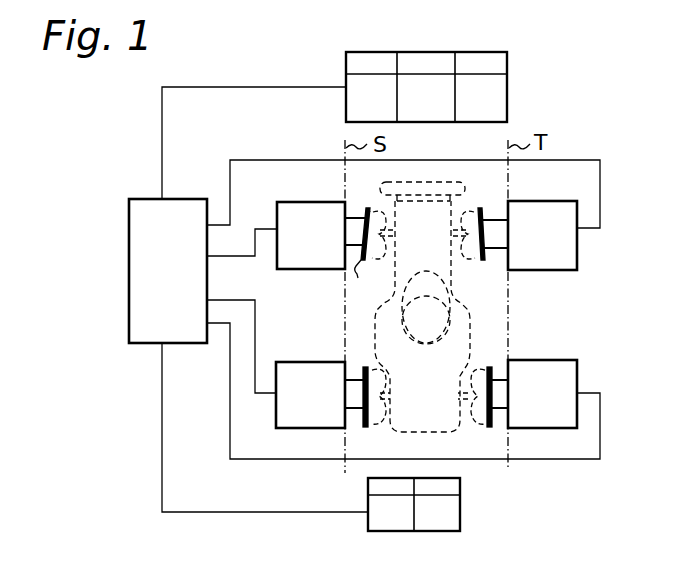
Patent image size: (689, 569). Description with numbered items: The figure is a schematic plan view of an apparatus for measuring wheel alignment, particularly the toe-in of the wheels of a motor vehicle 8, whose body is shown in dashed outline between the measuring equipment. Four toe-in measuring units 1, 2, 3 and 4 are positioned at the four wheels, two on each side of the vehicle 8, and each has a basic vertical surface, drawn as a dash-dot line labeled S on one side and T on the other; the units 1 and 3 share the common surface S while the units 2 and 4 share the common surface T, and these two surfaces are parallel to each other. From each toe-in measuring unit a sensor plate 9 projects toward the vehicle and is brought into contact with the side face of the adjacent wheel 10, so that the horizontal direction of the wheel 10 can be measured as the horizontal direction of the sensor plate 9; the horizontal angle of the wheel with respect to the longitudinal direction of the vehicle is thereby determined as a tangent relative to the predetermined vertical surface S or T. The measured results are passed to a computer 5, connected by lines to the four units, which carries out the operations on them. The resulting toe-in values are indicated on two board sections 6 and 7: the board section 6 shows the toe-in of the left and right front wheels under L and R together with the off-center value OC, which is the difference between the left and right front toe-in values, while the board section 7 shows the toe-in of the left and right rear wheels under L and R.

The toe-in measuring unit 1 is at (313, 202).
The toe-in measuring unit 2 is at (547, 201).
The toe-in measuring unit 3 is at (313, 362).
The toe-in measuring unit 4 is at (550, 360).
The computer 5 is at (187, 199).
The board section 6 is at (430, 51).
The board section 7 is at (461, 511).
The vehicle body 8 is at (462, 318).
The sensor plate 9 is at (359, 283).
The wheel 10 is at (375, 206).